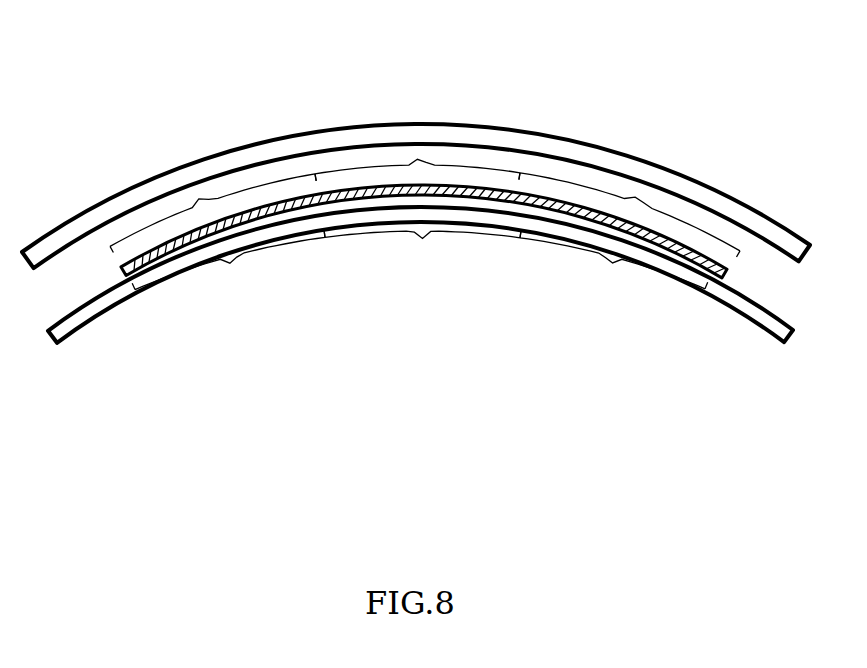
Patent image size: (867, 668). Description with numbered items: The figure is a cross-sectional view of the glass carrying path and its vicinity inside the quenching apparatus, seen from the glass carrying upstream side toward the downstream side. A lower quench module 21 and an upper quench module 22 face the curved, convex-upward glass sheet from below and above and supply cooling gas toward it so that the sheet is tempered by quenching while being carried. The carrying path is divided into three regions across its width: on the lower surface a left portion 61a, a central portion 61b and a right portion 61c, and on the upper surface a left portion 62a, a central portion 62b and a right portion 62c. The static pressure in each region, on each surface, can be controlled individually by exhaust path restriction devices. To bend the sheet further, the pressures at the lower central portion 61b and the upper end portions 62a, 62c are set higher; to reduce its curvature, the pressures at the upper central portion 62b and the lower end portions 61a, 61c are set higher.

The quench module 21 is at (742, 307).
The quench module 22 is at (753, 215).
The left portion of lower surface 61a is at (228, 271).
The central portion of lower surface 61b is at (422, 258).
The right portion of lower surface 61c is at (614, 275).
The left portion of upper surface 62a is at (199, 198).
The central portion of upper surface 62b is at (417, 159).
The right portion of upper surface 62c is at (636, 197).